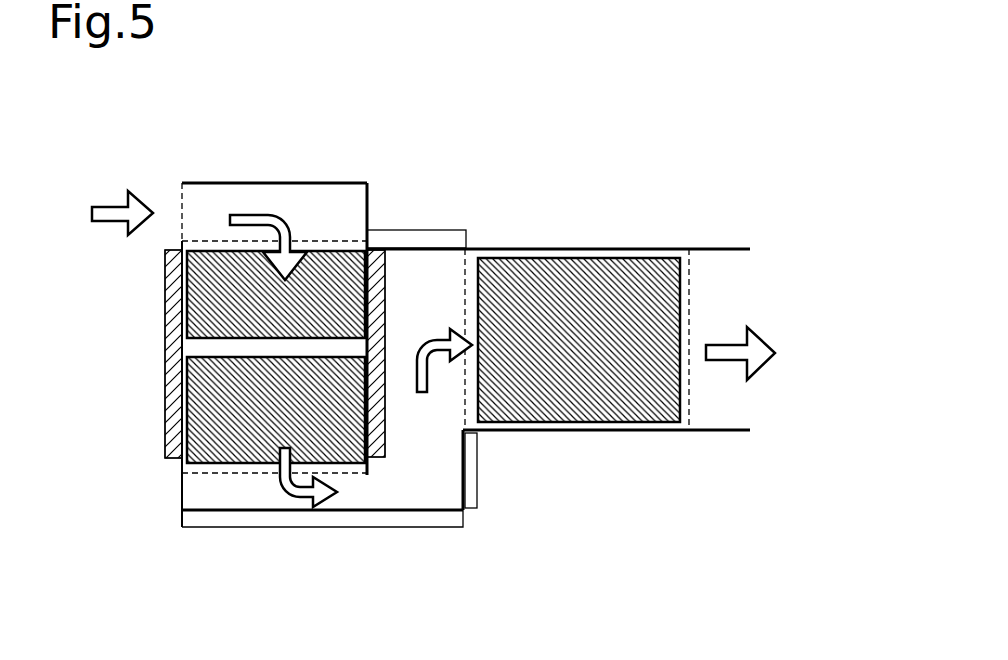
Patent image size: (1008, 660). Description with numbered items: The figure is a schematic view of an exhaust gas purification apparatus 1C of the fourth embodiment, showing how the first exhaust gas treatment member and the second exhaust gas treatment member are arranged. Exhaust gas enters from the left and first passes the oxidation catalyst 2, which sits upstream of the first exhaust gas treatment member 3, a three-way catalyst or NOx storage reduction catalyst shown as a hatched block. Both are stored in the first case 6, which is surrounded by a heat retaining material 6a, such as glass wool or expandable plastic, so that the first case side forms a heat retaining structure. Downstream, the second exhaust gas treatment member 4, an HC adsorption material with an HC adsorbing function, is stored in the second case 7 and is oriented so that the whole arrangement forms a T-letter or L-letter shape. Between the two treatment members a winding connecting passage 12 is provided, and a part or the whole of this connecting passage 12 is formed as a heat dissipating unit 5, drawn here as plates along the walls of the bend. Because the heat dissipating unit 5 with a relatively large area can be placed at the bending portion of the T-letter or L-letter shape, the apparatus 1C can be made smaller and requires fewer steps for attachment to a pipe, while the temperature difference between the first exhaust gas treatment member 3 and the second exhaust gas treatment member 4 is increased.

The exhaust gas purification apparatus 1C is at (538, 159).
The oxidation catalyst 2 is at (213, 285).
The first exhaust gas treatment member 3 is at (208, 407).
The second exhaust gas treatment member 4 is at (582, 277).
The heat dissipating unit 5 is at (423, 230).
The first case 6 is at (170, 372).
The heat retaining material 6a is at (170, 337).
The second case 7 is at (528, 249).
The connecting passage 12 is at (445, 467).